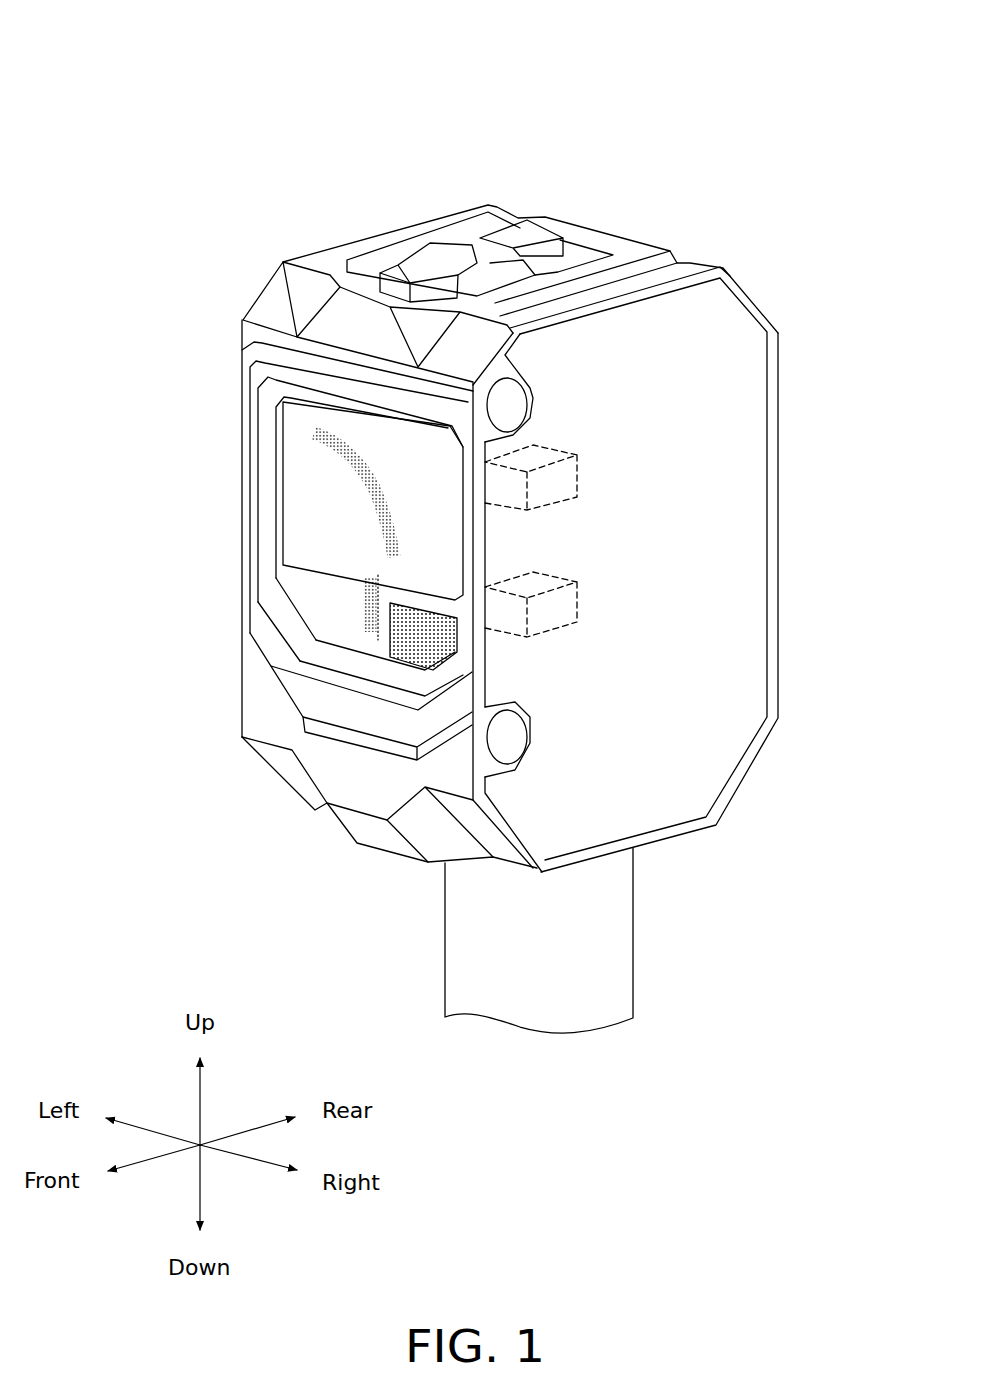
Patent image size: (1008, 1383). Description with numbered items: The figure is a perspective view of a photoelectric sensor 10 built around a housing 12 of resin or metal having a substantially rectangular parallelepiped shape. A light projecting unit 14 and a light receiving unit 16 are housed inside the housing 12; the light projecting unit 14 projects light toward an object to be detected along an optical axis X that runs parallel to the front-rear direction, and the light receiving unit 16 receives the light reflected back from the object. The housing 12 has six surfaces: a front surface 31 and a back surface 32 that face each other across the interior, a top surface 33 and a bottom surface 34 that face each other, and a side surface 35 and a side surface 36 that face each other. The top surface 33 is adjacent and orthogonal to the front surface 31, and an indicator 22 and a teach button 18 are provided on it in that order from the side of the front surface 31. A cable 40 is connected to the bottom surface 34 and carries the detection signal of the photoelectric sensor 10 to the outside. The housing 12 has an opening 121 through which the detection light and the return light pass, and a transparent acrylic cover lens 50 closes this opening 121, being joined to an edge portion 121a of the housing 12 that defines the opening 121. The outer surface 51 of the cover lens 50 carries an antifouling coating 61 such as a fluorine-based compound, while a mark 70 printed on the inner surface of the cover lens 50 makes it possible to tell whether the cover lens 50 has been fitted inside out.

The photoelectric sensor 10 is at (110, 23).
The housing 12 is at (258, 294).
The light projecting unit 14 is at (577, 608).
The light receiving unit 16 is at (578, 462).
The teach button 18 is at (527, 240).
The indicator 22 is at (443, 258).
The front surface 31 is at (363, 715).
The back surface 32 is at (781, 510).
The top surface 33 is at (357, 262).
The bottom surface 34 is at (650, 847).
The side surface 35 is at (653, 537).
The side surface 36 is at (250, 622).
The cable 40 is at (603, 988).
The cover lens 50 is at (312, 443).
The outer surface 51 is at (303, 498).
The antifouling coating 61 is at (297, 472).
The mark 70 is at (433, 640).
The opening 121 is at (280, 398).
The edge portion 121a is at (357, 363).
The optical axis X is at (350, 523).